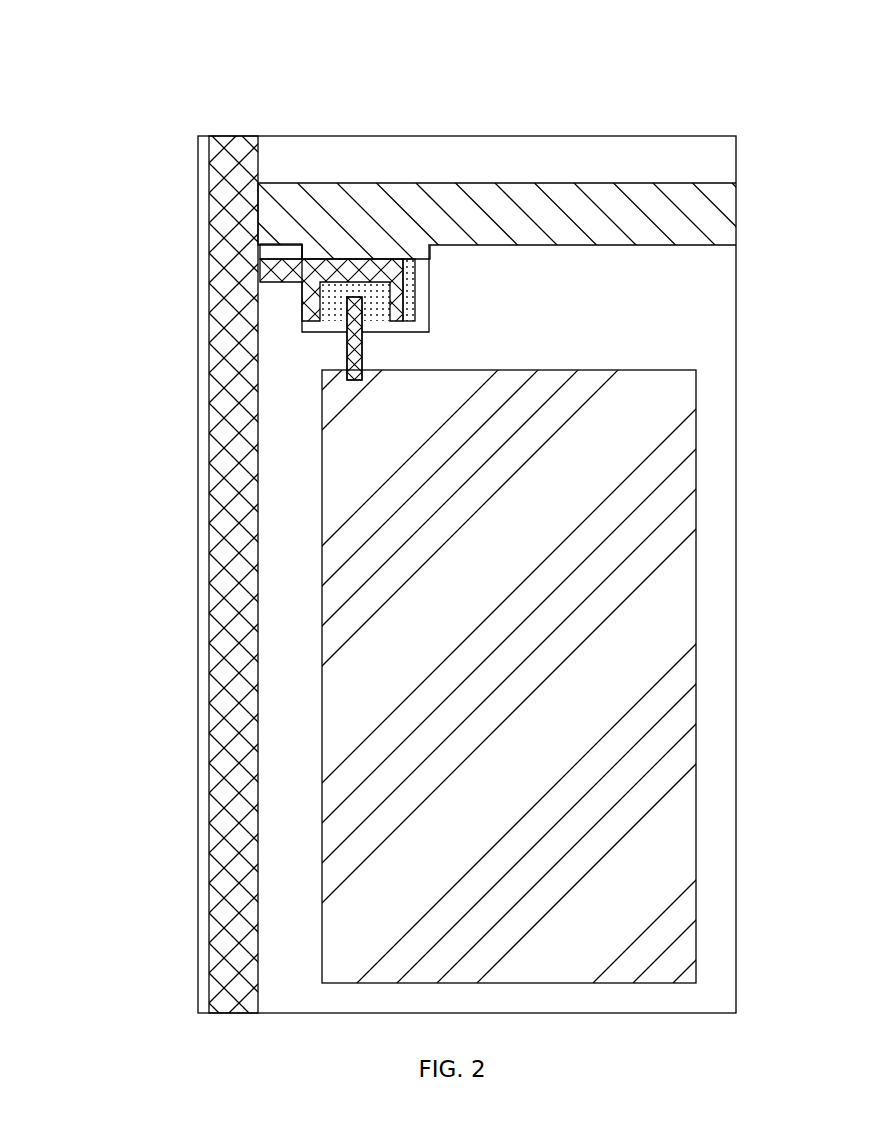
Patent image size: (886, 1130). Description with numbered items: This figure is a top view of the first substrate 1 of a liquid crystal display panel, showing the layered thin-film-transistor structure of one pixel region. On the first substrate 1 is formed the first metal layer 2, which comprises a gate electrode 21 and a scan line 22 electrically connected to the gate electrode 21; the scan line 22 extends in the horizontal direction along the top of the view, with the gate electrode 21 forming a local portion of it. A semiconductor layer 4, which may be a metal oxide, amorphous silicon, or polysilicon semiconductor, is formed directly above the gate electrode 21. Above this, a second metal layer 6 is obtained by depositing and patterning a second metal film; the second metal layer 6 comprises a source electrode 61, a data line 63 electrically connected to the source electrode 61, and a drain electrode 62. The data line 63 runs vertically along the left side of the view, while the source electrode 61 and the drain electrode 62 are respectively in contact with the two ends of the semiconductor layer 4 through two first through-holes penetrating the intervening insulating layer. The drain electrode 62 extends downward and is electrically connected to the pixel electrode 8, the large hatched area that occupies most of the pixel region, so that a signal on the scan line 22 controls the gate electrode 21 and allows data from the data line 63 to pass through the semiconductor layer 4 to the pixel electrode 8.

The first substrate 1 is at (737, 352).
The first metal layer 2 is at (514, 148).
The gate electrode 21 is at (420, 270).
The scan line 22 is at (462, 212).
The semiconductor layer 4 is at (415, 288).
The second metal layer 6 is at (418, 519).
The source electrode 61 is at (322, 269).
The drain electrode 62 is at (350, 378).
The data line 63 is at (220, 363).
The pixel electrode 8 is at (595, 502).